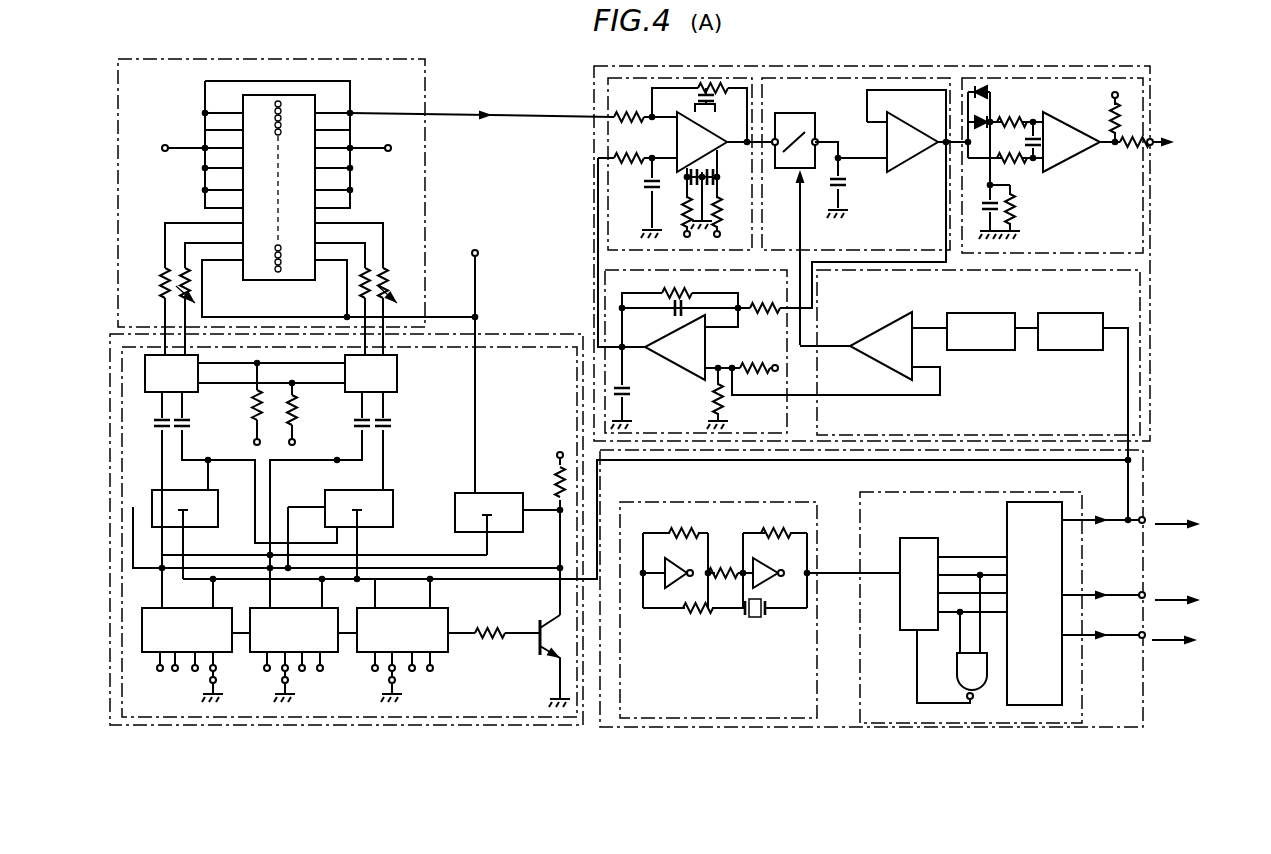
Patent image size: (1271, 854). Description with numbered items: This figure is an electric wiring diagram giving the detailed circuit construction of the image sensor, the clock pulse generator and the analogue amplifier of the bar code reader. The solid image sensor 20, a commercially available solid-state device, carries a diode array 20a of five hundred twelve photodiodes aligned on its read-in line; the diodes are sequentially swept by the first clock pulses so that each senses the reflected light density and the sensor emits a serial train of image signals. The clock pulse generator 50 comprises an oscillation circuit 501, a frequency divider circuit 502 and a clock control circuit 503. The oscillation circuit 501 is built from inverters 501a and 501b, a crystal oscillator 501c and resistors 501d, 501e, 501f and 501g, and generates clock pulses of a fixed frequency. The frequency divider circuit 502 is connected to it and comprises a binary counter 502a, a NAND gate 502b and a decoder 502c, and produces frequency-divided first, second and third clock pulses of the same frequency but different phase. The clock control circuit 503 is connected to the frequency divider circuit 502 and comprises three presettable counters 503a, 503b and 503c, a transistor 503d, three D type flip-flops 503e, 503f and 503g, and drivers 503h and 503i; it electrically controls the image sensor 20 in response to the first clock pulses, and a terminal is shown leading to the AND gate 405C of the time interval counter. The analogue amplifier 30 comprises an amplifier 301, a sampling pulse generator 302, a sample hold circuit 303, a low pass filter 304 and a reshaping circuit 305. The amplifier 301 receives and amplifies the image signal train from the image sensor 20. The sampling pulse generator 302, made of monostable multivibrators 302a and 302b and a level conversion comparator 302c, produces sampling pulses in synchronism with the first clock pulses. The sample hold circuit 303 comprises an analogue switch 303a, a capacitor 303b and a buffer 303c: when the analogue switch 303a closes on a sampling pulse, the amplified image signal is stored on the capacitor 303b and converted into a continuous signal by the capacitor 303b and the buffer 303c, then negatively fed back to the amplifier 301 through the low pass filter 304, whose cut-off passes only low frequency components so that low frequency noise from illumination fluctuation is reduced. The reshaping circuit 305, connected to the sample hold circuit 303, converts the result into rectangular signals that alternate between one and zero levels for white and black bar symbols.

The solid image sensor 20 is at (425, 92).
The diode array 20a is at (283, 262).
The AND gate 405C is at (478, 351).
The analogue amplifier 30 is at (593, 85).
The amplifier 301 is at (738, 78).
The sample hold circuit 303 is at (830, 78).
The analogue switch 303a is at (810, 113).
The capacitor 303b is at (845, 192).
The buffer 303c is at (920, 113).
The reshaping circuit 305 is at (1040, 80).
The low pass filter 304 is at (605, 277).
The sampling pulse generator 302 is at (1148, 288).
The monostable multivibrator 302a is at (1072, 313).
The monostable multivibrator 302b is at (979, 313).
The level conversion comparator 302c is at (900, 323).
The clock pulse generator 50 is at (525, 334).
The clock control circuit 503 is at (571, 677).
The presettable counter 503a is at (226, 652).
The presettable counter 503b is at (332, 652).
The presettable counter 503c is at (442, 652).
The transistor 503d is at (540, 622).
The D type flip-flop 503e is at (205, 527).
The D type flip-flop 503f is at (380, 527).
The D type flip-flop 503g is at (515, 532).
The driver 503h is at (198, 392).
The driver 503i is at (397, 386).
The oscillation circuit 501 is at (808, 700).
The inverter 501a is at (683, 586).
The inverter 501b is at (778, 588).
The crystal oscillator 501c is at (758, 620).
The resistor 501d is at (695, 618).
The resistor 501e is at (676, 530).
The resistor 501f is at (725, 583).
The resistor 501g is at (765, 530).
The frequency divider circuit 502 is at (1080, 706).
The binary counter 502a is at (920, 532).
The NAND gate 502b is at (958, 666).
The decoder 502c is at (1007, 525).